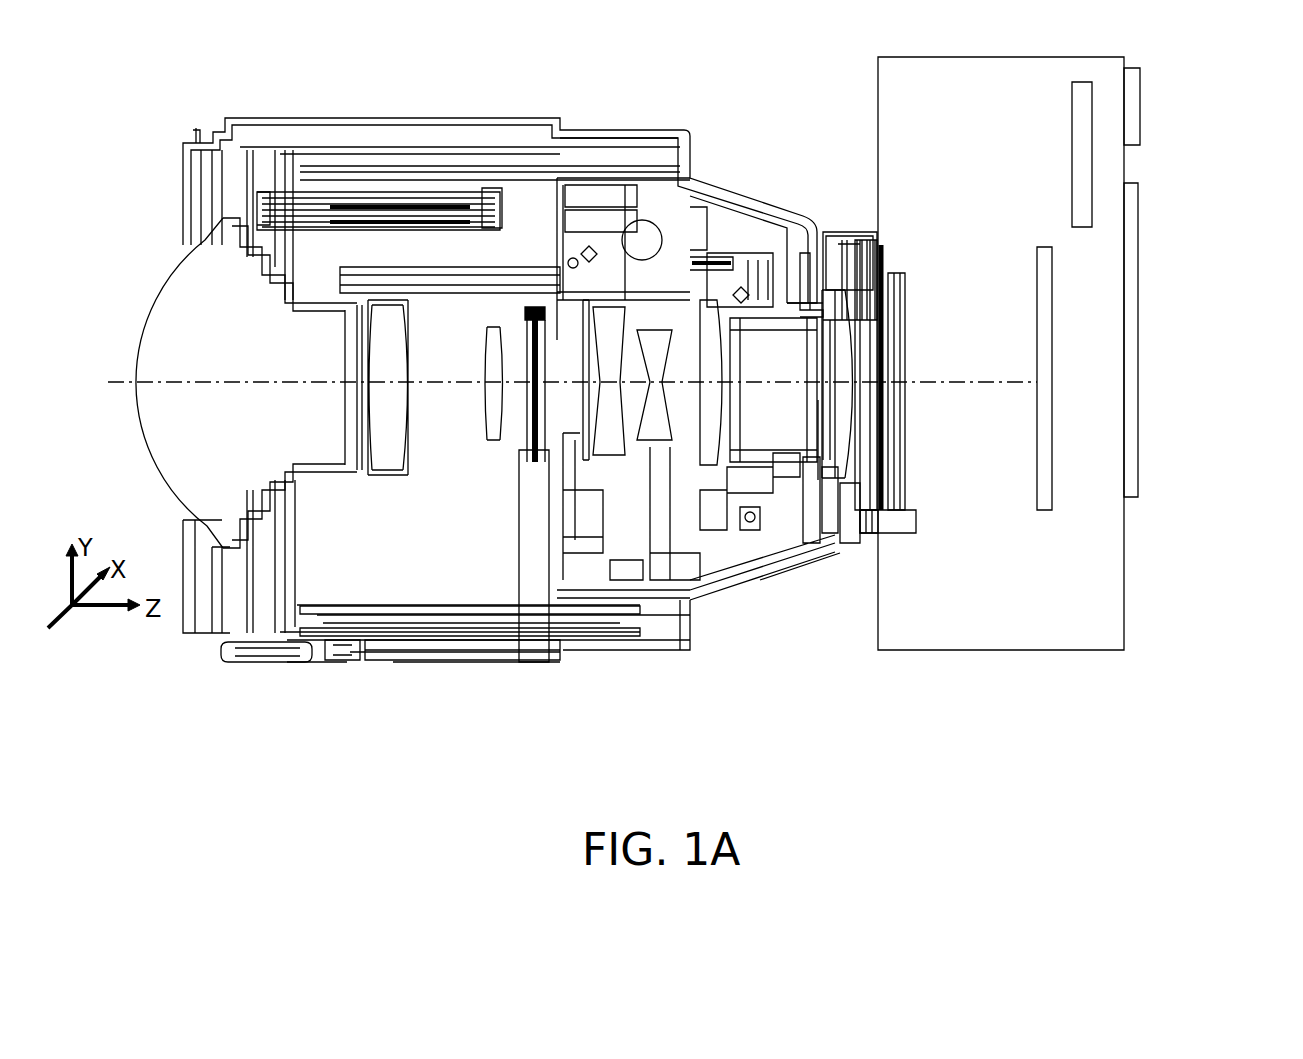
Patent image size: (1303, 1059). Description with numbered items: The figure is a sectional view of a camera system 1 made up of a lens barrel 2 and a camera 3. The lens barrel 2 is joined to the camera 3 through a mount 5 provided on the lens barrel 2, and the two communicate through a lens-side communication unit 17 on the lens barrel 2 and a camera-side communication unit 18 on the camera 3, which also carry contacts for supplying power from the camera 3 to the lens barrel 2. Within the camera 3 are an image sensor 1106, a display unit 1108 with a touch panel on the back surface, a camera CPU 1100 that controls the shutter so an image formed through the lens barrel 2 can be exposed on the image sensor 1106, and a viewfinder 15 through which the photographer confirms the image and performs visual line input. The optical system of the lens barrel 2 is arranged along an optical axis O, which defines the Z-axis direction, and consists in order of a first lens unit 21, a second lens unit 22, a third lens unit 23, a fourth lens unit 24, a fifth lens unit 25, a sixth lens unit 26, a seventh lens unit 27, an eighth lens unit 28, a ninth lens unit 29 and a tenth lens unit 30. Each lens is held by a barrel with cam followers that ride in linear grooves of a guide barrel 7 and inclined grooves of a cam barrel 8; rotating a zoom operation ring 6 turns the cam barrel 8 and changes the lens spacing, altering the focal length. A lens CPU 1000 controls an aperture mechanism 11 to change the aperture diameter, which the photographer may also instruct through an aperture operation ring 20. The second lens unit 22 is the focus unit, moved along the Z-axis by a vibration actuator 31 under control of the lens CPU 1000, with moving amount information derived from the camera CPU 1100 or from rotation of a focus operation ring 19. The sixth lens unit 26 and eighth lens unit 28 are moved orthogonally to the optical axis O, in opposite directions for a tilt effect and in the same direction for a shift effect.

The camera system 1 is at (170, 712).
The lens barrel 2 is at (862, 672).
The camera 3 is at (878, 672).
The mount 5 is at (887, 275).
The zoom operation ring 6 is at (415, 650).
The guide barrel 7 is at (513, 607).
The cam barrel 8 is at (465, 622).
The aperture mechanism 11 is at (538, 574).
The viewfinder 15 is at (1138, 107).
The lens-side communication unit 17 is at (870, 523).
The camera-side communication unit 18 is at (897, 520).
The focus operation ring 19 is at (350, 652).
The aperture operation ring 20 is at (290, 655).
The first lens unit 21 is at (249, 383).
The second lens unit 22 is at (388, 387).
The third lens unit 23 is at (490, 374).
The fourth lens unit 24 is at (515, 412).
The fifth lens unit 25 is at (572, 380).
The sixth lens unit 26 is at (610, 381).
The seventh lens unit 27 is at (657, 385).
The eighth lens unit 28 is at (697, 437).
The ninth lens unit 29 is at (773, 390).
The tenth lens unit 30 is at (841, 384).
The vibration actuator 31 is at (345, 207).
The lens CPU 1000 is at (832, 257).
The camera CPU 1100 is at (1081, 147).
The image sensor 1106 is at (1050, 491).
The display unit 1108 is at (1138, 427).
The optical axis O is at (924, 378).